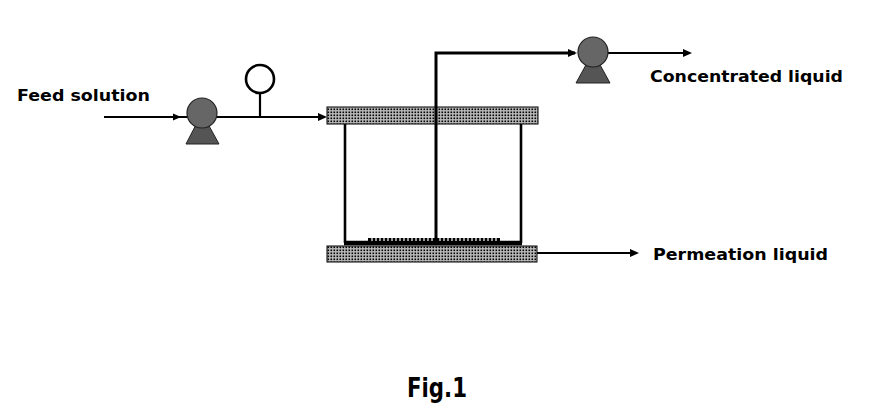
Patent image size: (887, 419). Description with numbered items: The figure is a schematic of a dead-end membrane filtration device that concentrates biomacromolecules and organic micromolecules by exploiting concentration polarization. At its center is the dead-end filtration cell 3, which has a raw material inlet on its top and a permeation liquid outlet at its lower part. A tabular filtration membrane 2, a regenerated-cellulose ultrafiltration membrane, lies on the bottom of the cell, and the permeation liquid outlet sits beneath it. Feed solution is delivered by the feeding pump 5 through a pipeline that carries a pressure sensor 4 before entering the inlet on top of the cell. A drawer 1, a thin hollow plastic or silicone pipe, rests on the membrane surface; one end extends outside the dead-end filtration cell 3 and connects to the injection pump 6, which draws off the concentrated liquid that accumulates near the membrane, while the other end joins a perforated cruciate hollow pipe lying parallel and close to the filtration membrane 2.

The drawer 1 is at (433, 199).
The filtration membrane 2 is at (373, 252).
The dead-end filtration cell 3 is at (495, 171).
The pressure sensor 4 is at (270, 64).
The feeding pump 5 is at (204, 127).
The injection pump 6 is at (603, 57).